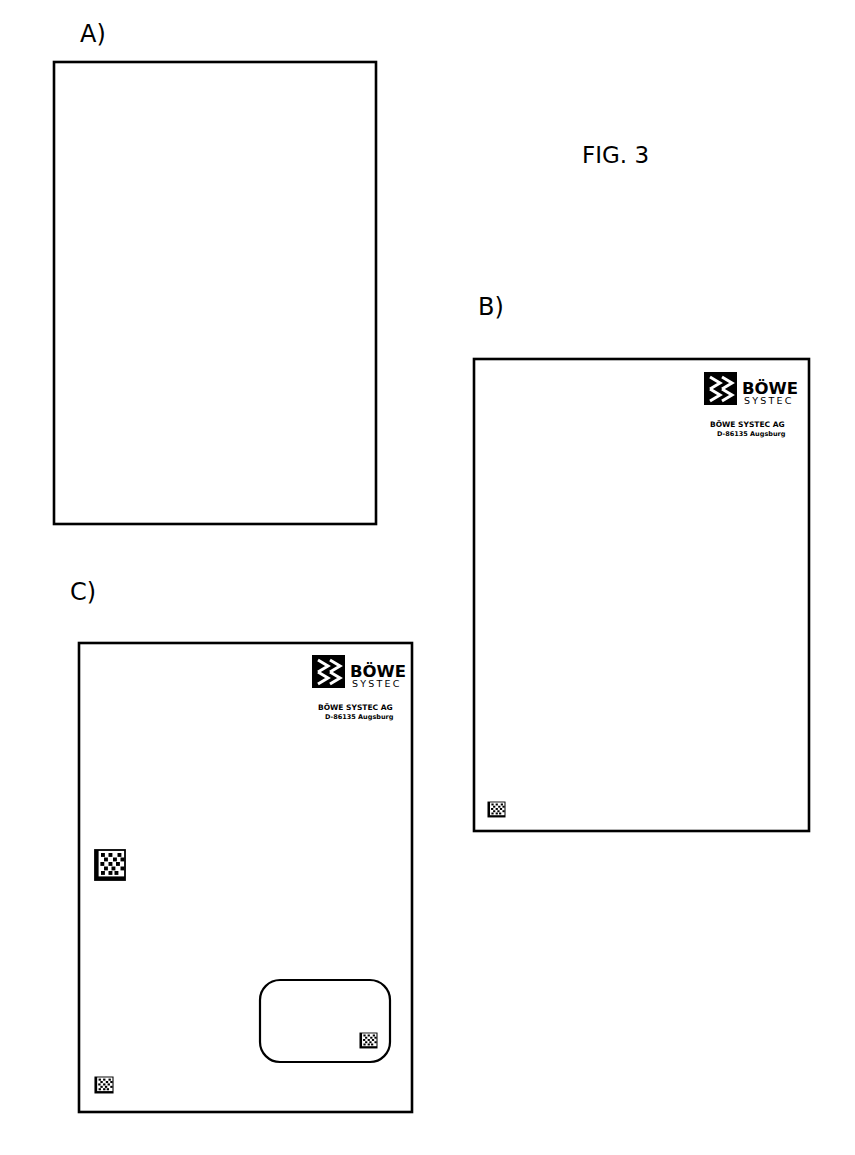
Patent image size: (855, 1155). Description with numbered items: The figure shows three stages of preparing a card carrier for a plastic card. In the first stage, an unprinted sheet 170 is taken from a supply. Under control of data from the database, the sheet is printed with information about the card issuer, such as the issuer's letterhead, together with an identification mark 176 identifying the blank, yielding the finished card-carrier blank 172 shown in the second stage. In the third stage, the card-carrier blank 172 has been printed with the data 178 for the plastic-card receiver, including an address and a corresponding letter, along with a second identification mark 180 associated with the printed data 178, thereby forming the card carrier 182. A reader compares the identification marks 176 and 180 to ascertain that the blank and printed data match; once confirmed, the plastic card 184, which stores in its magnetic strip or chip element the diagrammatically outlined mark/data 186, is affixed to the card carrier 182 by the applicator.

The unprinted sheet 170 is at (362, 177).
The card-carrier blank 172 is at (615, 368).
The identification mark 176 is at (500, 818).
The data for the plastic-card receiver 178 is at (112, 767).
The card carrier 182 is at (133, 657).
The second identification mark 180 is at (95, 862).
The plastic card 184 is at (377, 1008).
The mark/data of the plastic card 186 is at (373, 1050).